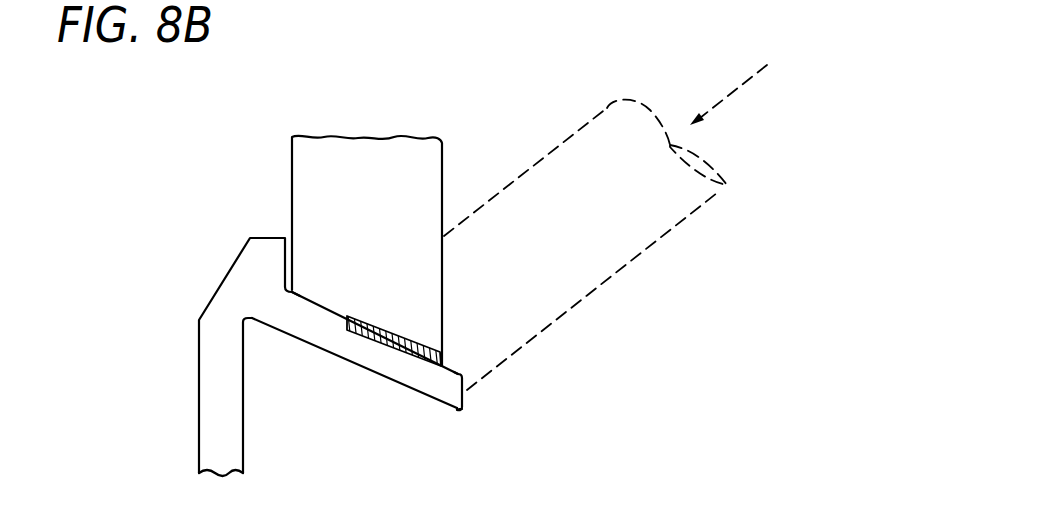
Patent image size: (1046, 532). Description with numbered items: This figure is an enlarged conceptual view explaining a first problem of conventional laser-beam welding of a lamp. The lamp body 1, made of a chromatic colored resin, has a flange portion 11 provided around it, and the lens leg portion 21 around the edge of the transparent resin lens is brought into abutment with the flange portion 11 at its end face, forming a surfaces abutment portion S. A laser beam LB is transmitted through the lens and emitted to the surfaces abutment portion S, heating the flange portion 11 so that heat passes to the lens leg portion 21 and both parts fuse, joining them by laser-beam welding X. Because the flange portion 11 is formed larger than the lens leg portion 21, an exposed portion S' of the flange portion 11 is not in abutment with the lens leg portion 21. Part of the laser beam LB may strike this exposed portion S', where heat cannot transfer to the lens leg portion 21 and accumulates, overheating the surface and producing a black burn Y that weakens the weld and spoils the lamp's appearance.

The lamp body 1 is at (222, 414).
The flange portion 11 is at (312, 328).
The lens leg portion 21 is at (310, 182).
The surfaces abutment portion S is at (317, 325).
The exposed portion S' is at (462, 365).
The laser-beam welding X is at (374, 345).
The burn Y is at (466, 405).
The laser beam LB is at (615, 277).